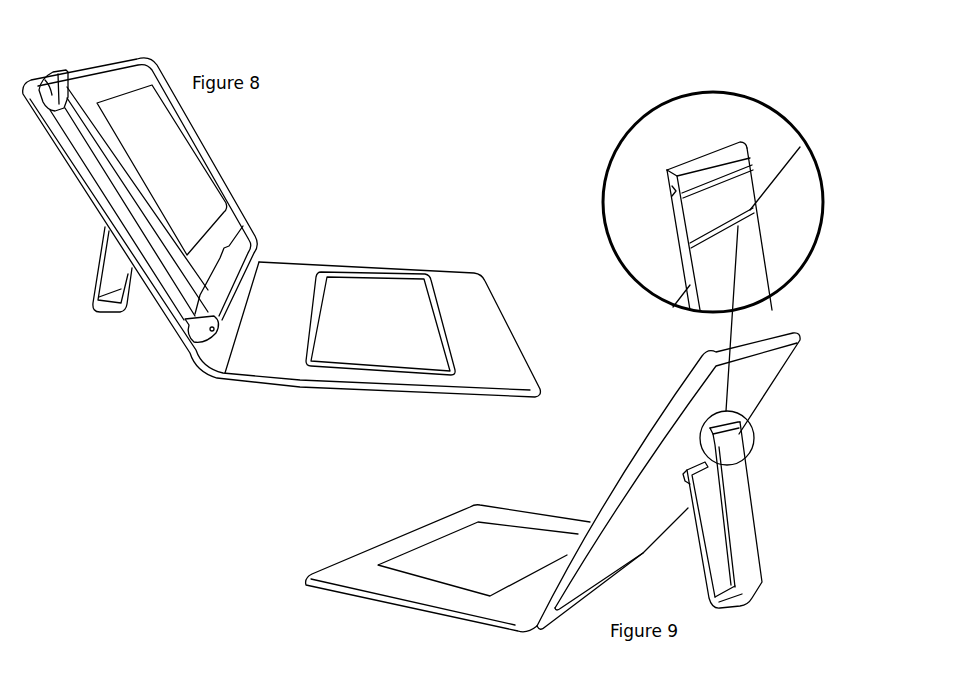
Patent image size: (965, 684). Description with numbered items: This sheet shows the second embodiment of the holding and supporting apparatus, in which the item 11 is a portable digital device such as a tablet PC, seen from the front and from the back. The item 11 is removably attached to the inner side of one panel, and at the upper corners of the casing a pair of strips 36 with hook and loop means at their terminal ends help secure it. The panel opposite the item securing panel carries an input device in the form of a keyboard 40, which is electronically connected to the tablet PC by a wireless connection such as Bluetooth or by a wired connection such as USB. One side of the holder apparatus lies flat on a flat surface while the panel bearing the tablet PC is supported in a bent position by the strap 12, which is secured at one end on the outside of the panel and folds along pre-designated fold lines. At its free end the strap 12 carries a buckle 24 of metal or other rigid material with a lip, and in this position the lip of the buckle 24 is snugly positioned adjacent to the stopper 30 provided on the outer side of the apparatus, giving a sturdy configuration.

In FIG. 8, the item 11 is at (210, 185).
In FIG. 9, the item 11 is at (672, 408).
In FIG. 8, the strap 12 is at (92, 269).
In FIG. 9, the strap 12 is at (742, 488).
In FIG. 9, the buckle 24 is at (738, 200).
In FIG. 9, the stopper 30 is at (742, 143).
In FIG. 8, the strips 36 is at (67, 71).
In FIG. 8, the keyboard 40 is at (353, 268).
In FIG. 9, the keyboard 40 is at (447, 570).